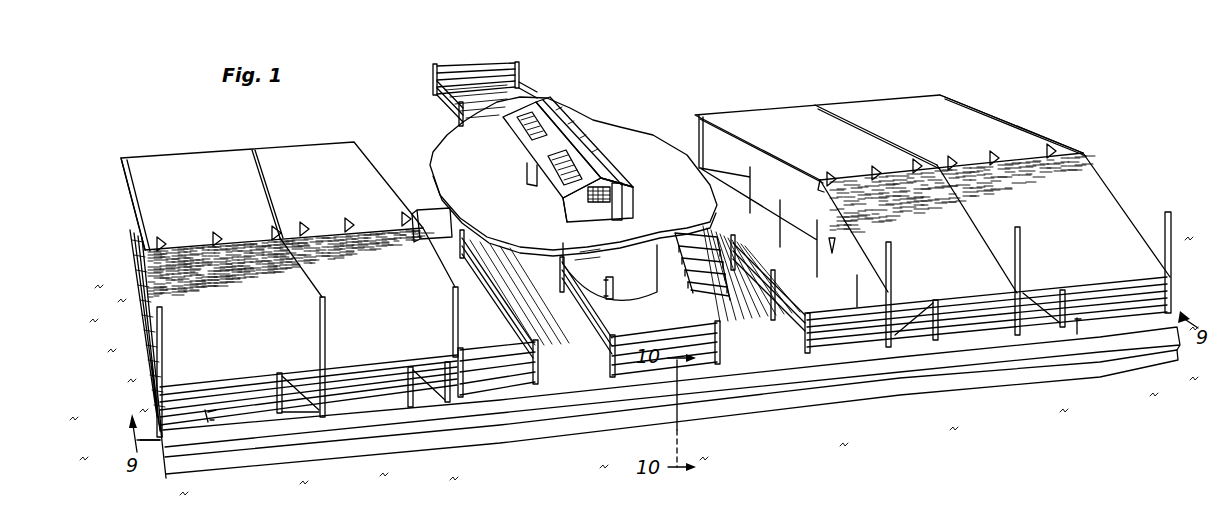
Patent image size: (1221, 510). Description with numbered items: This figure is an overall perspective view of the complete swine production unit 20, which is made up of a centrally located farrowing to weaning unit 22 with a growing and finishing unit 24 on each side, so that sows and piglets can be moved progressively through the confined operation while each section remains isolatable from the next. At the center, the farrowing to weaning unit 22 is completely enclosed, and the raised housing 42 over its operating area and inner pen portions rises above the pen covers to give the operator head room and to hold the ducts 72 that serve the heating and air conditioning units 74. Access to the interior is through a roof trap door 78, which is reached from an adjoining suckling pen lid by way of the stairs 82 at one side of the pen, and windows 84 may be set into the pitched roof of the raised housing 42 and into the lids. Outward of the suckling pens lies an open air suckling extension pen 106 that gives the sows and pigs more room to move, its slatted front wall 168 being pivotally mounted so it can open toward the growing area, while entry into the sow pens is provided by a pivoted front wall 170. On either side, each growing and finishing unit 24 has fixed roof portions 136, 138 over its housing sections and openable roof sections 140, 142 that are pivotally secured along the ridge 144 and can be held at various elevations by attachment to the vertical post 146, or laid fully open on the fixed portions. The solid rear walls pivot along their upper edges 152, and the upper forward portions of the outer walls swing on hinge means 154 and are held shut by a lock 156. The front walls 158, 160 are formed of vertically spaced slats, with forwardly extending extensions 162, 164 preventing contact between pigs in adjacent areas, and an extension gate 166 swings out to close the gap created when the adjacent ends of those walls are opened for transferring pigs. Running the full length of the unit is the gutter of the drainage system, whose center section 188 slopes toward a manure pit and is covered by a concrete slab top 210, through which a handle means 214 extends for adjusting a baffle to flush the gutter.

The swine production unit 20 is at (1030, 130).
The farrowing to weaning unit 22 is at (588, 112).
The growing and finishing unit 24 is at (163, 150).
The raised housing 42 is at (612, 174).
The ducts 72 is at (620, 209).
The heating and air conditioning units 74 is at (610, 187).
The roof trap door 78 is at (590, 145).
The stairs 82 is at (708, 297).
The windows 84 is at (530, 133).
The suckling extension pen 106 is at (492, 336).
The roof portion 136 is at (306, 153).
The roof portion 138 is at (147, 177).
The openable roof section 140 is at (363, 312).
The openable roof section 142 is at (215, 312).
The ridge 144 is at (233, 242).
The vertical post 146 is at (324, 300).
The upper edges 152 is at (830, 225).
The hinge means 154 is at (836, 240).
The lock 156 is at (815, 186).
The front wall 158 is at (353, 375).
The front wall 160 is at (200, 397).
The extension 162 is at (452, 401).
The extension 164 is at (329, 401).
The extension gate 166 is at (283, 380).
The slatted front wall 168 is at (518, 365).
The front wall 170 is at (705, 347).
The center section 188 is at (565, 427).
The concrete slab top 210 is at (757, 380).
The handle means 214 is at (1079, 334).